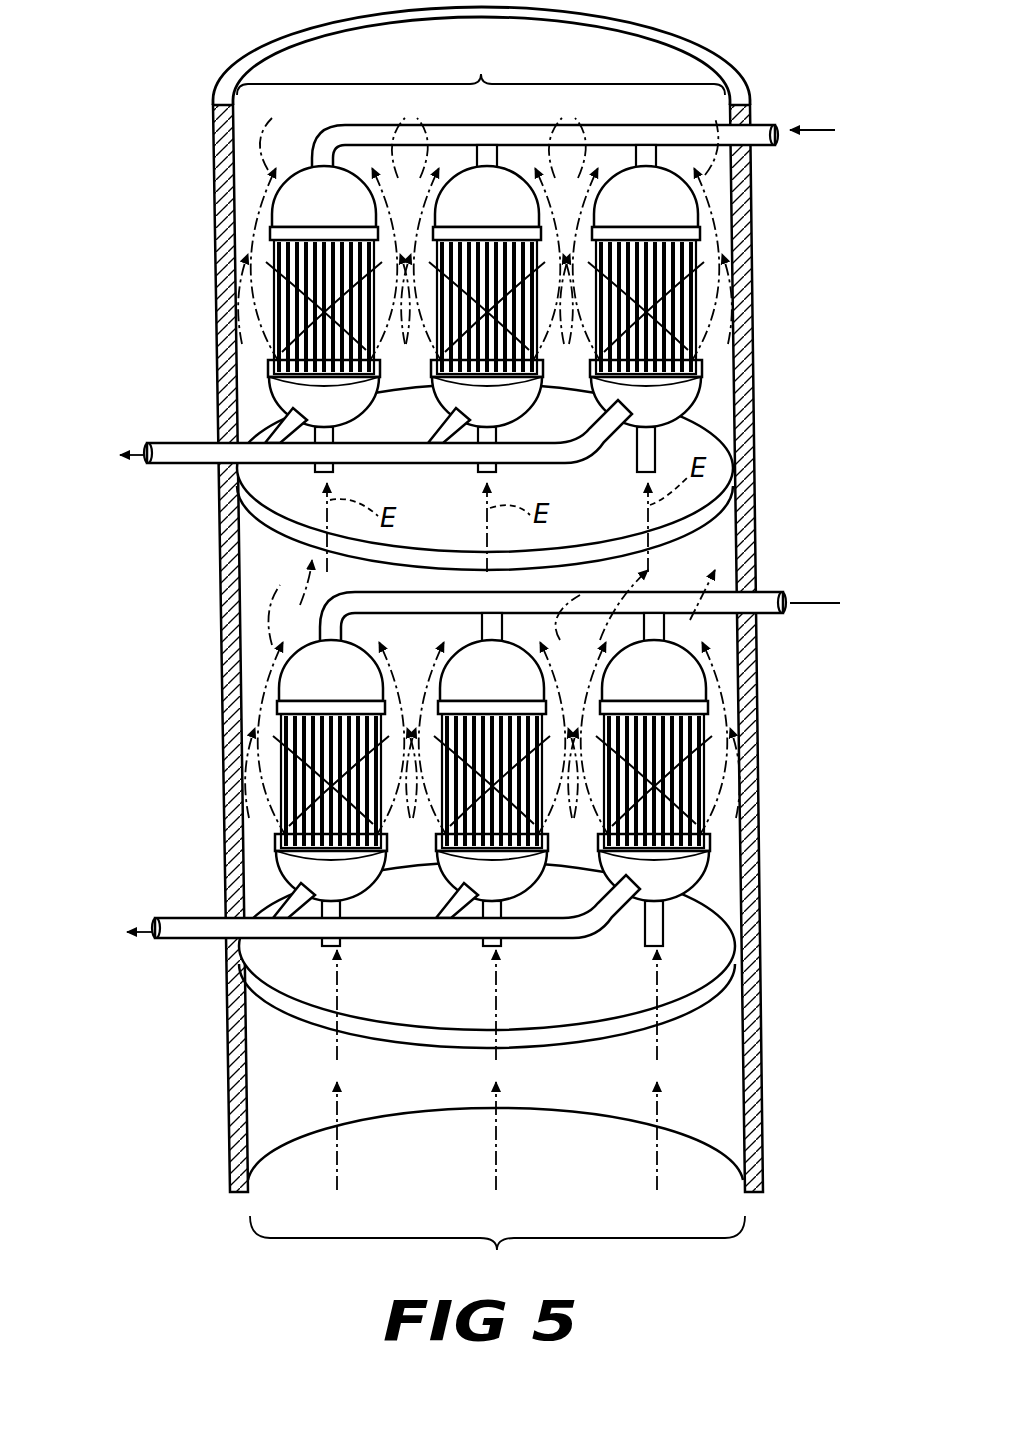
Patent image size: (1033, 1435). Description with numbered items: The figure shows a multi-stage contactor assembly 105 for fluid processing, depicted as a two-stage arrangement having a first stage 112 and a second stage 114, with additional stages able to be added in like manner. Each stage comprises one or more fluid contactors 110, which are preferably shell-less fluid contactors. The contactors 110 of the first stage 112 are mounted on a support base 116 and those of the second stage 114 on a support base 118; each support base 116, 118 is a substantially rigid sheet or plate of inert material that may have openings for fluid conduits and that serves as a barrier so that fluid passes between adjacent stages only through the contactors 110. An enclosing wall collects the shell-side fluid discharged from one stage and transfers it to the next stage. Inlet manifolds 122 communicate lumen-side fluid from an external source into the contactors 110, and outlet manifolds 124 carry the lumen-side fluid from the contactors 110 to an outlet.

The multi-stage contactor assembly 105 is at (222, 37).
The fluid contactor 110 is at (300, 185).
The first stage 112 is at (257, 777).
The second stage 114 is at (257, 333).
The support base 116 is at (705, 940).
The support base 118 is at (697, 437).
The inlet manifold 122 is at (187, 448).
The outlet manifold 124 is at (767, 125).